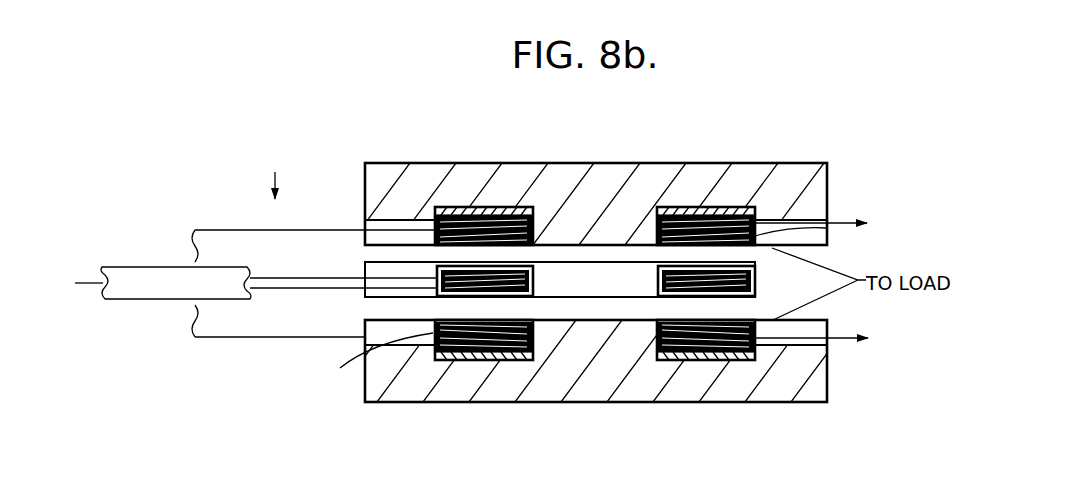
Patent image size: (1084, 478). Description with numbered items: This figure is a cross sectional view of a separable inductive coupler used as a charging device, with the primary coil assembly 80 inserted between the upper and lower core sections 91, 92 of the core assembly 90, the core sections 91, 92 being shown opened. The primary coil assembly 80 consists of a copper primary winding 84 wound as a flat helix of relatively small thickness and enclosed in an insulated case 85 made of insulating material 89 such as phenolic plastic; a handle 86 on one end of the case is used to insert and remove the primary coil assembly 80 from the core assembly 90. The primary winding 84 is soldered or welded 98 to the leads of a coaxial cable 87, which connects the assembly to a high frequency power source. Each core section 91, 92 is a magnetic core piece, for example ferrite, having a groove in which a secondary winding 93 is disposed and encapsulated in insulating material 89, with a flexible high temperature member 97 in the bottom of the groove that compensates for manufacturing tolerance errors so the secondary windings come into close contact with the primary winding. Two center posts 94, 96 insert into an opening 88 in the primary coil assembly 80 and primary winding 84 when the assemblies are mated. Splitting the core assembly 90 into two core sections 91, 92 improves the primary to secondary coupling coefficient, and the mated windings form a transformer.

The primary coil assembly 80 is at (247, 362).
The primary winding 84 is at (752, 268).
The insulated case 85 is at (757, 290).
The handle 86 is at (271, 174).
The coaxial cable 87 is at (153, 272).
The opening 88 is at (650, 292).
The insulating material 89 is at (535, 276).
The core assembly 90 is at (857, 203).
The upper core section 91 is at (805, 182).
The lower core section 92 is at (808, 388).
The secondary winding 93 is at (372, 369).
The center post 94 is at (580, 320).
The center post 96 is at (623, 247).
The flexible high temperature member 97 is at (482, 207).
The solder or weld joint 98 is at (325, 303).